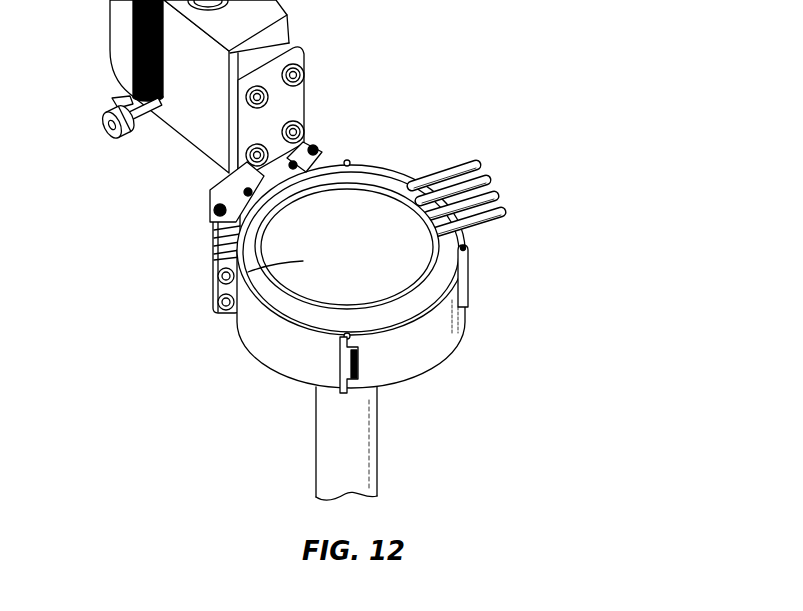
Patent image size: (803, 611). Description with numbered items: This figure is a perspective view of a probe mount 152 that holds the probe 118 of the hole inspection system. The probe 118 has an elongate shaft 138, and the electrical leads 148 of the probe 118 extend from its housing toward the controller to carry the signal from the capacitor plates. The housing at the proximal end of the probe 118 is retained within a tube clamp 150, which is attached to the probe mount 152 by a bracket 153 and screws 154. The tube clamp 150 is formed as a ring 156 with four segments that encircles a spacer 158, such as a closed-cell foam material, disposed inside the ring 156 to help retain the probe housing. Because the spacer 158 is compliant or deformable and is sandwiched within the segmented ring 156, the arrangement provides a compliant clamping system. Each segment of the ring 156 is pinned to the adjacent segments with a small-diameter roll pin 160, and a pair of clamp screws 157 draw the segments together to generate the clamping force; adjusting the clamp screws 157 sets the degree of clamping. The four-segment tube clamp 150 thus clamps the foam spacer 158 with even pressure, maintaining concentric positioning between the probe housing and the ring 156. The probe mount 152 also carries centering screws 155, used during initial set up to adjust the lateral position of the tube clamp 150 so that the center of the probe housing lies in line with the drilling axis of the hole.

The probe 118 is at (392, 484).
The elongate shaft 138 is at (352, 455).
The electrical leads 148 is at (500, 190).
The tube clamp 150 is at (545, 374).
The probe mount 152 is at (193, 127).
The bracket 153 is at (278, 103).
The screws 154 is at (297, 138).
The centering screws 155 is at (210, 214).
The ring 156 is at (433, 332).
The clamp screws 157 is at (217, 274).
The spacer 158 is at (442, 277).
The roll pin 160 is at (338, 338).